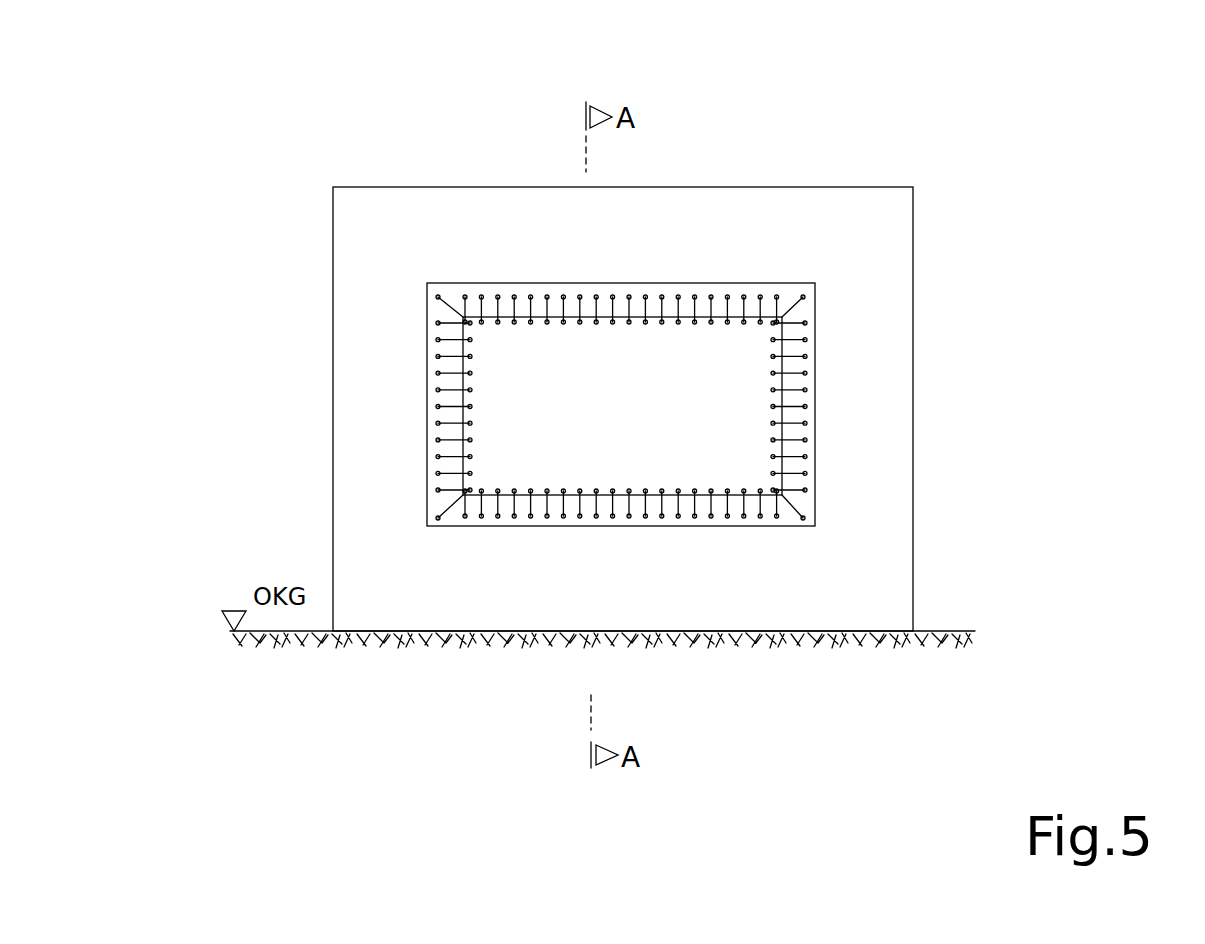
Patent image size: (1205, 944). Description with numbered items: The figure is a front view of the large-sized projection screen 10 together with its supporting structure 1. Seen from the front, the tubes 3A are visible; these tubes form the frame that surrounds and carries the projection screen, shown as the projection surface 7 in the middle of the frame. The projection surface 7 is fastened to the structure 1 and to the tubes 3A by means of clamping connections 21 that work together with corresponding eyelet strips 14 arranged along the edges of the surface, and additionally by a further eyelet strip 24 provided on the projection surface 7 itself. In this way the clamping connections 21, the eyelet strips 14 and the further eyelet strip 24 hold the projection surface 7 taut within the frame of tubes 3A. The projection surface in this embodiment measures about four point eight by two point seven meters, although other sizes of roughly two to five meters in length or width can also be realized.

The structure 1 is at (619, 418).
The tubes 3A is at (672, 200).
The projection surface 7 is at (500, 364).
The large-sized projection screen 10 is at (1045, 88).
The eyelet strips 14 is at (641, 376).
The clamping connections 21 is at (782, 312).
The further eyelet strip 24 is at (616, 318).